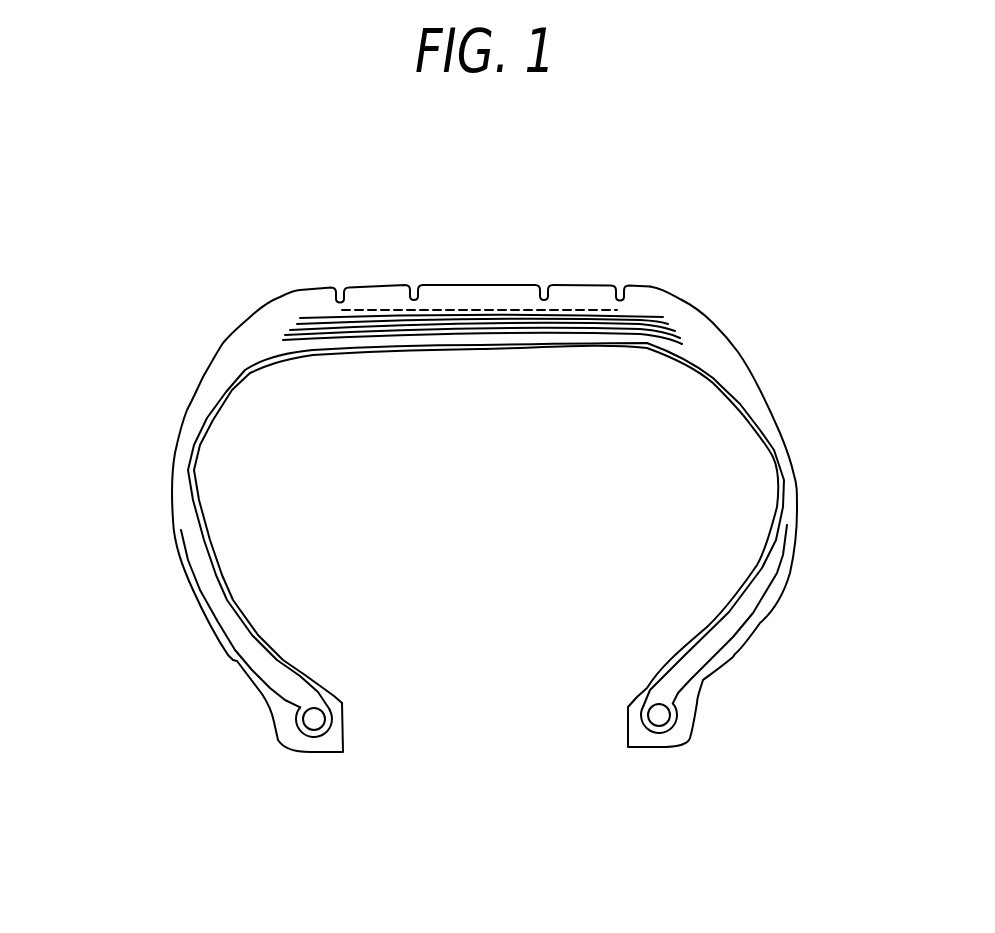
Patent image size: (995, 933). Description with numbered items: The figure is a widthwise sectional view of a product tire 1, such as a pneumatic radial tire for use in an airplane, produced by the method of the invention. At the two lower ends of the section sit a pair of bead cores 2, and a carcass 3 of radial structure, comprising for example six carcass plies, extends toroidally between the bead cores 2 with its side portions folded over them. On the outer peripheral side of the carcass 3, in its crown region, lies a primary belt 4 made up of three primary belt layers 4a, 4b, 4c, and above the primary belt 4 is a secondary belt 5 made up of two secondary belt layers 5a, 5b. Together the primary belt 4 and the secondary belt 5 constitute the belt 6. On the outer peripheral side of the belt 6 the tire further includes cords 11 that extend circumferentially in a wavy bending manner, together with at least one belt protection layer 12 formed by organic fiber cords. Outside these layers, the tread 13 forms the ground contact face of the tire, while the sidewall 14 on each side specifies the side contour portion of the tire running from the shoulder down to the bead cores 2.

The product tire 1 is at (692, 261).
The bead cores 2 is at (318, 717).
The carcass 3 is at (776, 386).
The primary belt 4 is at (117, 267).
The primary belt layer 4a is at (282, 349).
The primary belt layer 4b is at (286, 337).
The primary belt layer 4c is at (290, 333).
The secondary belt 5 is at (117, 107).
The secondary belt layer 5a is at (290, 330).
The secondary belt layer 5b is at (298, 320).
The belt 6 is at (63, 170).
The cords 11 is at (582, 308).
The belt protection layer 12 is at (521, 299).
The tread 13 is at (443, 285).
The sidewall 14 is at (181, 553).